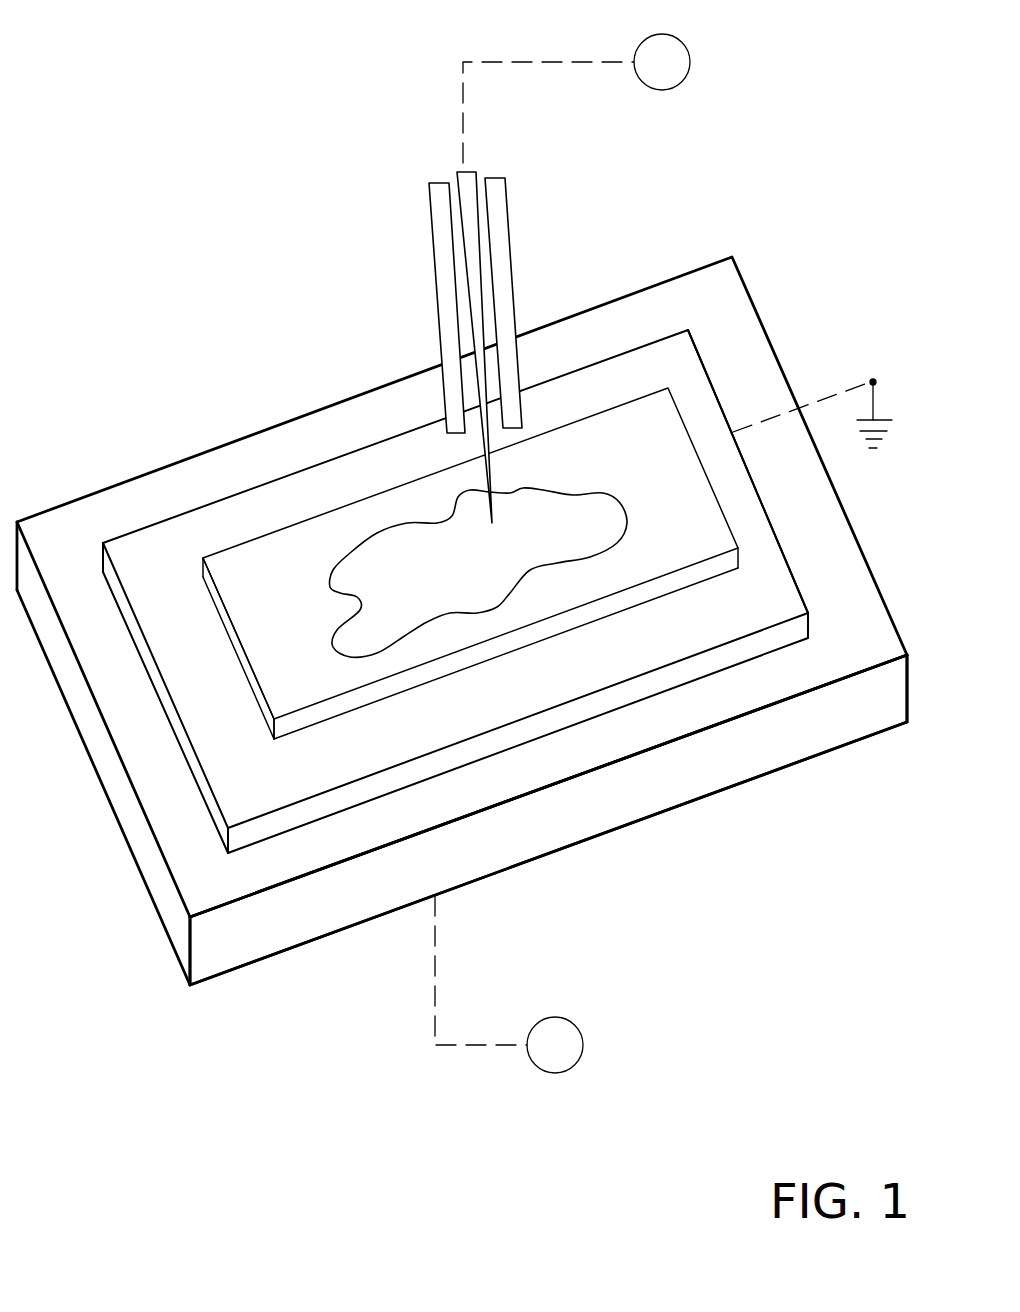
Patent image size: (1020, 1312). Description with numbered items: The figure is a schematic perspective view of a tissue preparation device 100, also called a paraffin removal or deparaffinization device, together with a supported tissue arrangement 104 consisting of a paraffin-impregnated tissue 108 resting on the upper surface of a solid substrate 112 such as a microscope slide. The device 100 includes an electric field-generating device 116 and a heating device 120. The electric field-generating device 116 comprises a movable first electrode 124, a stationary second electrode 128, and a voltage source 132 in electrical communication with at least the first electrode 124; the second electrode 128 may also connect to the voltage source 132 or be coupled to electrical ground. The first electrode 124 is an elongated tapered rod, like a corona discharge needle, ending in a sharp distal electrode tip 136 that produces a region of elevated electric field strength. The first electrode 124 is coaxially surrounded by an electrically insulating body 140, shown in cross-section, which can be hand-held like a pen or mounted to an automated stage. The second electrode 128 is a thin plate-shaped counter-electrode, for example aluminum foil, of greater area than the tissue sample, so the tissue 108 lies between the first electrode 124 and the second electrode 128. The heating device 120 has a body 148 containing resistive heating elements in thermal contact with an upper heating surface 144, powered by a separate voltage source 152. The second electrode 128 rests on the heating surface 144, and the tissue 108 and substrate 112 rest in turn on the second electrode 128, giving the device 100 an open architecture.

The tissue preparation device 100 is at (138, 143).
The supported tissue arrangement 104 is at (236, 510).
The tissue 108 is at (342, 593).
The solid substrate 112 is at (233, 650).
The electric field-generating device 116 is at (447, 296).
The heating device 120 is at (148, 993).
The first electrode 124 is at (462, 260).
The second electrode 128 is at (710, 375).
The voltage source 132 is at (665, 92).
The distal electrode tip 136 is at (497, 513).
The body 140 is at (510, 223).
The heating surface 144 is at (640, 730).
The body 148 is at (558, 827).
The voltage source 152 is at (577, 1023).